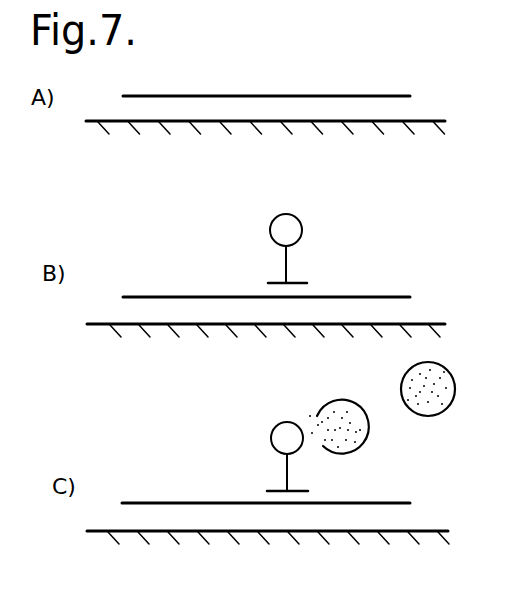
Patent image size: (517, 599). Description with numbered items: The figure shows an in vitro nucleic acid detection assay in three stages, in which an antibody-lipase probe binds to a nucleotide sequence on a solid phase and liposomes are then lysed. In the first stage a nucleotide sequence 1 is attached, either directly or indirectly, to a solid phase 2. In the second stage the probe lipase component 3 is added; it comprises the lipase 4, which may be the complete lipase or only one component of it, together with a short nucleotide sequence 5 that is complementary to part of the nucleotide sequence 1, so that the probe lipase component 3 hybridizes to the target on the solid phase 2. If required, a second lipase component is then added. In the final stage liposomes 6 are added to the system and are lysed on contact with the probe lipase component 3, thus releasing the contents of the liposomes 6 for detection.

The nucleotide sequence 1 is at (394, 96).
The solid phase 2 is at (445, 121).
The probe lipase component 3 is at (287, 265).
The lipase 4 is at (297, 218).
The short nucleotide sequence 5 is at (272, 282).
The liposomes 6 is at (369, 436).